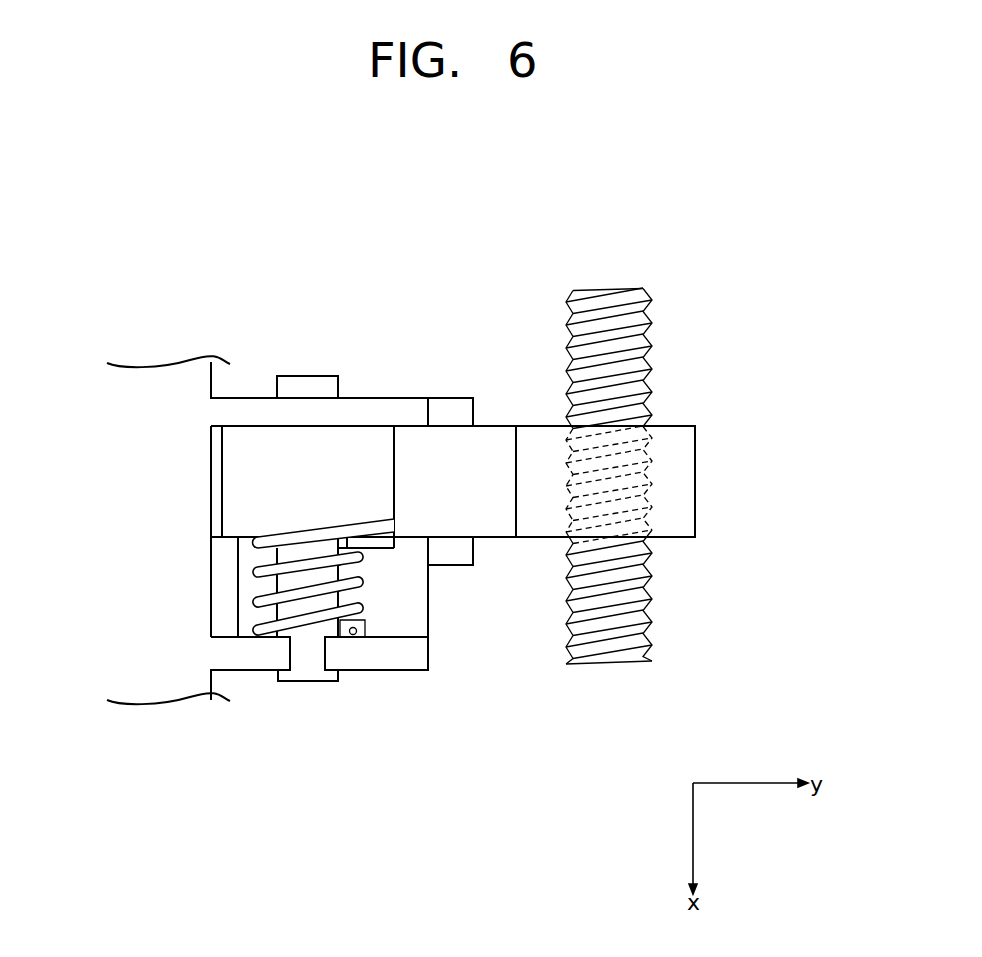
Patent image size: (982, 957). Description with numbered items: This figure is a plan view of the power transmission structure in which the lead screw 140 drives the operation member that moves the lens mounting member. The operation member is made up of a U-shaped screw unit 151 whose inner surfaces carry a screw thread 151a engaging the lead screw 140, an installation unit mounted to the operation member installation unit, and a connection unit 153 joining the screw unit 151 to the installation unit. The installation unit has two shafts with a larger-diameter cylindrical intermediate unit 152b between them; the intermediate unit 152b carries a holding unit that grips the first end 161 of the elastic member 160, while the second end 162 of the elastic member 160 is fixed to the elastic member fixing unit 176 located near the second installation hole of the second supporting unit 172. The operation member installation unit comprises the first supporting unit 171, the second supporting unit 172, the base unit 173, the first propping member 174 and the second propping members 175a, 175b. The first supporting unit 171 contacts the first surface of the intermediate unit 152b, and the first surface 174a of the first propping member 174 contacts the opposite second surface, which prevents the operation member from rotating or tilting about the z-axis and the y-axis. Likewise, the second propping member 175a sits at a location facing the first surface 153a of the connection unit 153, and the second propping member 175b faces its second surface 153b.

The lead screw 140 is at (605, 310).
The screw unit 151 is at (682, 480).
The screw thread 151a is at (652, 443).
The intermediate unit 152b is at (247, 502).
The connection unit 153 is at (493, 450).
The first surface 153a is at (457, 424).
The second surface 153b is at (452, 538).
The elastic member 160 is at (260, 598).
The first end 161 is at (355, 525).
The second end 162 is at (353, 638).
The first supporting unit 171 is at (358, 408).
The second supporting unit 172 is at (233, 662).
The base unit 173 is at (417, 608).
The first propping member 174 is at (220, 607).
The first surface 174a is at (212, 528).
The second propping member 175a is at (442, 405).
The second propping member 175b is at (467, 550).
The elastic member fixing unit 176 is at (364, 636).